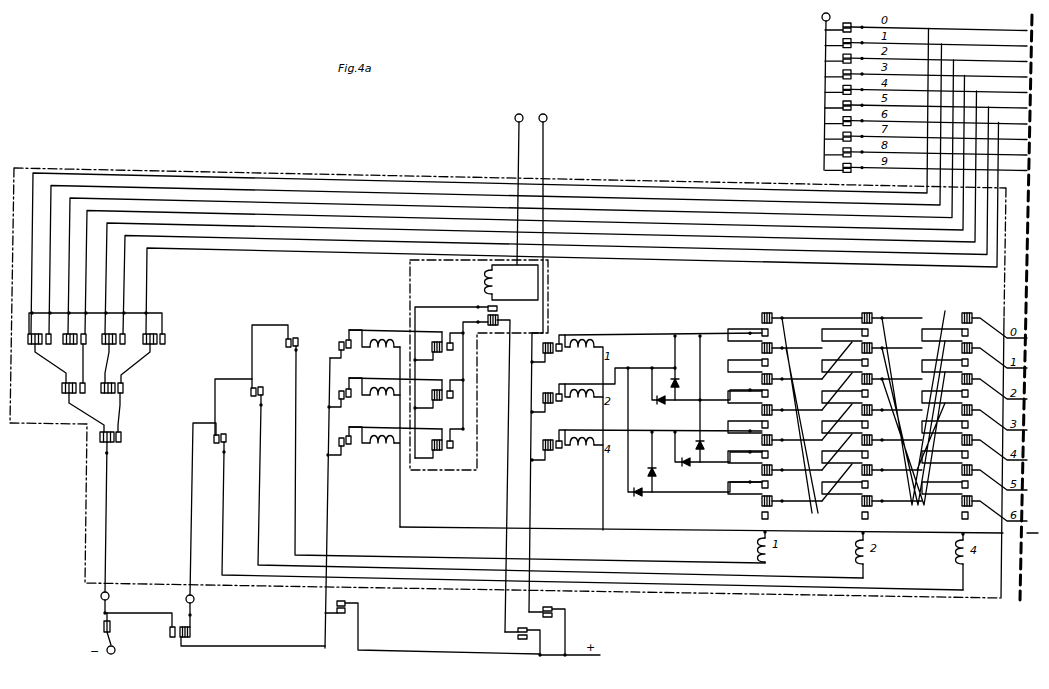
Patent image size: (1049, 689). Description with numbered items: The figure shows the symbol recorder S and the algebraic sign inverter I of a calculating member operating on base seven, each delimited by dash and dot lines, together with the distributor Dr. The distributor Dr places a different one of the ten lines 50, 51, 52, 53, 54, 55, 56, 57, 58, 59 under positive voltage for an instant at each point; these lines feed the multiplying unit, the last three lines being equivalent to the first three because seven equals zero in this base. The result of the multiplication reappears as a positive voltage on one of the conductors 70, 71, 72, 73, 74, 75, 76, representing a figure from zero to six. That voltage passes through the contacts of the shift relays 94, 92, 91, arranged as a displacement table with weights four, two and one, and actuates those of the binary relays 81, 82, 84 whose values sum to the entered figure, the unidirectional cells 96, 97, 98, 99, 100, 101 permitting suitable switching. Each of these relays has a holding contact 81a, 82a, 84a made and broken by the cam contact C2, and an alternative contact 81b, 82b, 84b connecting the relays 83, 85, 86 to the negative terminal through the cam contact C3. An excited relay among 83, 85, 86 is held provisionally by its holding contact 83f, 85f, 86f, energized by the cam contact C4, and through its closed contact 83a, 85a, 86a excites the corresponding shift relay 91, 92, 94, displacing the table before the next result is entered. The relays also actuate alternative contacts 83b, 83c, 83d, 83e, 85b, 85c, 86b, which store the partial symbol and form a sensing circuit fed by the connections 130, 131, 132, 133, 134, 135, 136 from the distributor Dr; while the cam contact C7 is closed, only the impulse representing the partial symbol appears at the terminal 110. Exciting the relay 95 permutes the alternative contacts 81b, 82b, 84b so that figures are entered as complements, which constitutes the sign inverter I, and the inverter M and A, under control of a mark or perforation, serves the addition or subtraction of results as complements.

The distributor Dr is at (825, 86).
The line 50 is at (1020, 29).
The line 51 is at (1020, 45).
The line 52 is at (1020, 60).
The line 53 is at (1020, 76).
The line 54 is at (1020, 91).
The line 55 is at (1020, 107).
The line 56 is at (1020, 122).
The line 57 is at (1020, 138).
The line 58 is at (1020, 154).
The line 59 is at (1020, 169).
The connection 130 is at (479, 182).
The connection 131 is at (494, 189).
The connection 132 is at (509, 197).
The connection 133 is at (524, 205).
The connection 134 is at (540, 212).
The connection 135 is at (555, 220).
The connection 136 is at (150, 282).
The alternative contact 83e is at (47, 358).
The alternative contact 83d is at (80, 358).
The alternative contact 83c is at (117, 358).
The alternative contact 83b is at (148, 358).
The alternative contact 85c is at (83, 407).
The alternative contact 85b is at (119, 407).
The alternative contact 86b is at (117, 512).
The closed contact 86a is at (576, 509).
The closed contact 85a is at (539, 478).
The closed contact 83a is at (508, 444).
The holding contact 83f is at (338, 347).
The holding contact 85f is at (338, 392).
The holding contact 86f is at (338, 438).
The relay 83 is at (395, 350).
The relay 85 is at (395, 398).
The relay 86 is at (395, 437).
The alternative contact 81b is at (438, 350).
The alternative contact 82b is at (438, 397).
The alternative contact 84b is at (440, 446).
The holding contact 81a is at (542, 349).
The holding contact 82a is at (550, 403).
The holding contact 84a is at (550, 450).
The relay 81 is at (663, 431).
The relay 82 is at (620, 393).
The relay 84 is at (663, 449).
The relay 95 is at (485, 283).
The unidirectional cell 96 is at (679, 383).
The unidirectional cell 97 is at (660, 406).
The unidirectional cell 98 is at (704, 445).
The unidirectional cell 99 is at (687, 468).
The unidirectional cell 100 is at (656, 478).
The unidirectional cell 101 is at (639, 498).
The relay 91 is at (758, 548).
The relay 92 is at (856, 550).
The relay 94 is at (956, 551).
The output conductor 70 is at (894, 322).
The output conductor 71 is at (894, 352).
The output conductor 72 is at (894, 383).
The output conductor 73 is at (894, 414).
The output conductor 74 is at (894, 444).
The output conductor 75 is at (894, 474).
The output conductor 76 is at (894, 505).
The terminal 110 is at (100, 598).
The cam contact C7 is at (97, 633).
The cam contact C4 is at (432, 627).
The cam contact C3 is at (551, 642).
The cam contact C2 is at (555, 612).
The inverter relay M is at (169, 634).
The inverter contact A is at (253, 637).
The algebraic sign inverter I is at (548, 302).
The symbol recorder S is at (933, 598).